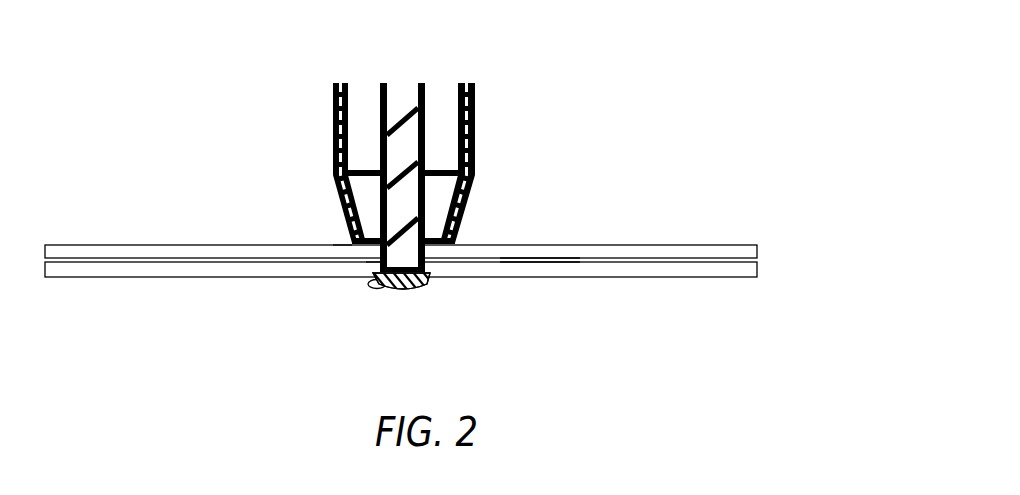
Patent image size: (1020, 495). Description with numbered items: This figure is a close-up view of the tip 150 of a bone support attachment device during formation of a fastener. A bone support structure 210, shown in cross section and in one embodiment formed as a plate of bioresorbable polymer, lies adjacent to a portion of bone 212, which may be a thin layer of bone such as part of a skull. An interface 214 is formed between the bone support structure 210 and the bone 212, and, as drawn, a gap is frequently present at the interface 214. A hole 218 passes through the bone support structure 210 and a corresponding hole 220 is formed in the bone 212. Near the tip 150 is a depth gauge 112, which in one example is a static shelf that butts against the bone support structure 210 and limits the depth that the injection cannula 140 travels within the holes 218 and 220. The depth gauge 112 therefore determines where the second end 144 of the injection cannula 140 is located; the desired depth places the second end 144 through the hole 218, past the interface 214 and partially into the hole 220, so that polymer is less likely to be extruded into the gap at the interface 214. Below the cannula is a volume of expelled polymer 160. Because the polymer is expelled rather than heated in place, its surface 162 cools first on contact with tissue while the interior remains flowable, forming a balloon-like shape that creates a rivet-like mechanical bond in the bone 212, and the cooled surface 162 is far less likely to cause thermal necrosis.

The tip 150 is at (417, 157).
The depth gauge 112 is at (350, 235).
The injection cannula 140 is at (403, 203).
The second end 144 is at (410, 257).
The hole 218 is at (352, 242).
The bone support structure 210 is at (685, 245).
The bone 212 is at (683, 268).
The interface 214 is at (538, 260).
The hole 220 is at (375, 268).
The expelled polymer 160 is at (437, 290).
The surface 162 is at (383, 292).